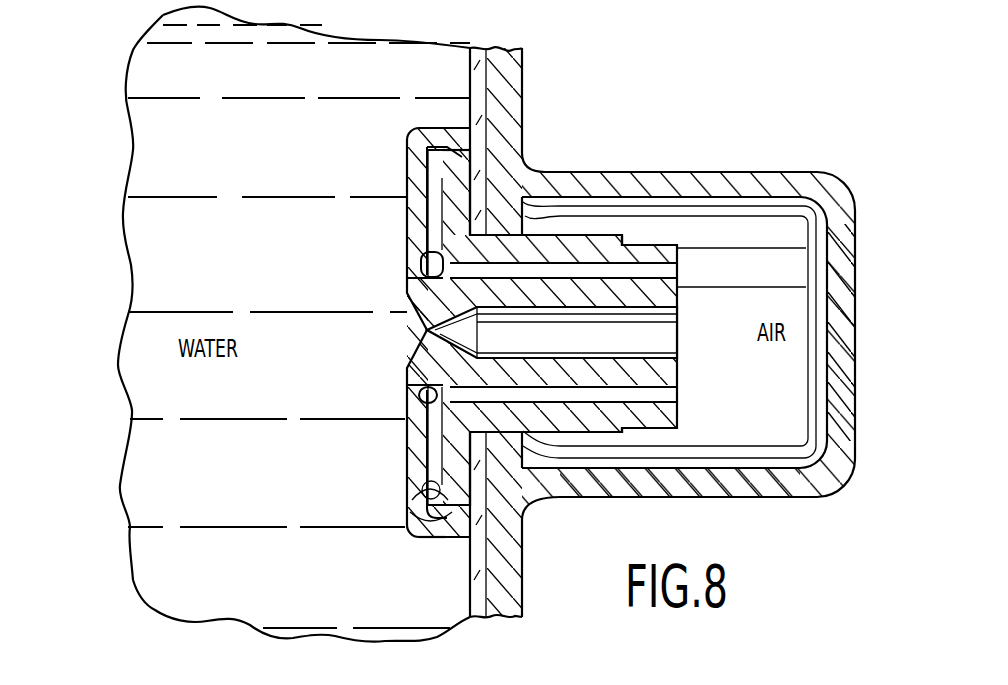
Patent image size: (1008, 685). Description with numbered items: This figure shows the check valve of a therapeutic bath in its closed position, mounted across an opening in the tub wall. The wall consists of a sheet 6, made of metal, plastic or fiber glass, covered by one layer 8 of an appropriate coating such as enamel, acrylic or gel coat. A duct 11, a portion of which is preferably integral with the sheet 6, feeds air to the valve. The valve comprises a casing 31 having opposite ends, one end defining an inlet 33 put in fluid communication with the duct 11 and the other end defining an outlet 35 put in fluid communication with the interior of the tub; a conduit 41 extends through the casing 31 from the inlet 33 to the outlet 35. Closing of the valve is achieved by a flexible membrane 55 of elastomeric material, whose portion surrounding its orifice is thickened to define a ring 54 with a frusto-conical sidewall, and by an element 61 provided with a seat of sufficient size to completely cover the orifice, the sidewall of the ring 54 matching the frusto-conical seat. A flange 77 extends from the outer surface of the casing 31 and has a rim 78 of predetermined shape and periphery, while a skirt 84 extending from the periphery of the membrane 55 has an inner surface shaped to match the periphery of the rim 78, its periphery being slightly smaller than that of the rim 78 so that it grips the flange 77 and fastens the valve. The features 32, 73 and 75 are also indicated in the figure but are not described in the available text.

The sheet 6 is at (500, 62).
The layer of coating 8 is at (486, 52).
The duct 11 is at (790, 182).
The casing 31 is at (593, 247).
The liner 32 is at (710, 206).
The inlet 33 is at (679, 268).
The outlet 35 is at (420, 420).
The conduit 41 is at (665, 406).
The ring 54 is at (427, 265).
The flexible membrane 55 is at (410, 478).
The element 61 is at (633, 310).
The annular groove 73 is at (608, 240).
The shoulder 75 is at (627, 238).
The flange 77 is at (428, 482).
The rim 78 is at (420, 530).
The skirt 84 is at (425, 136).